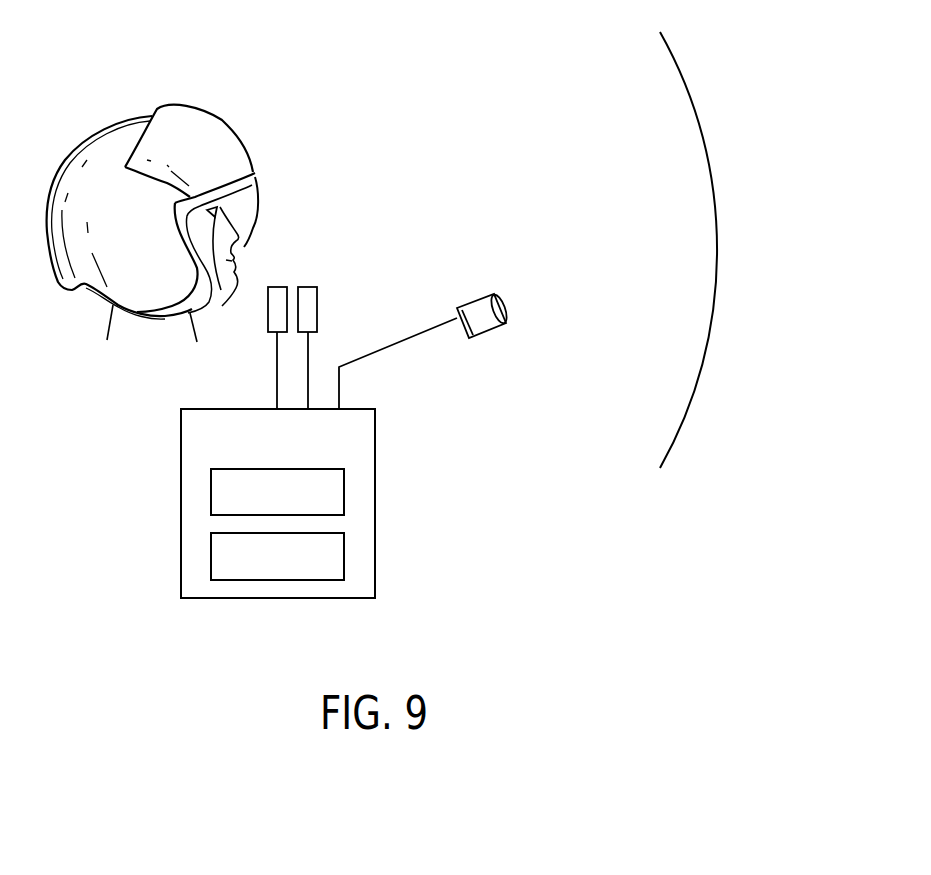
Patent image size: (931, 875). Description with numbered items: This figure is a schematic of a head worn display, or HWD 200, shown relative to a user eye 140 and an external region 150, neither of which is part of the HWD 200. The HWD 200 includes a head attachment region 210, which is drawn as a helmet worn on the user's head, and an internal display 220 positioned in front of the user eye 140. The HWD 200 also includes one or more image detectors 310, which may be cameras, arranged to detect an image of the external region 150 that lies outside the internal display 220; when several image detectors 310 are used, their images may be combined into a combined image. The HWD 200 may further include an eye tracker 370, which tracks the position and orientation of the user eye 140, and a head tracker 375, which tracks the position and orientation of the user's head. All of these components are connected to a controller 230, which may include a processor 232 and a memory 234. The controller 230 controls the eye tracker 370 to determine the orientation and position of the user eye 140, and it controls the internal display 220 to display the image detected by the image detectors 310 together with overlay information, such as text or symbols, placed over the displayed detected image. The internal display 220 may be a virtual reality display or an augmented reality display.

The head worn display 200 is at (376, 104).
The head attachment region 210 is at (90, 148).
The internal display 220 is at (257, 192).
The user eye 140 is at (222, 292).
The head tracker 375 is at (276, 287).
The eye tracker 370 is at (317, 302).
The image detectors 310 is at (487, 334).
The controller 230 is at (270, 503).
The processor 232 is at (345, 487).
The memory 234 is at (345, 552).
The external region 150 is at (712, 322).